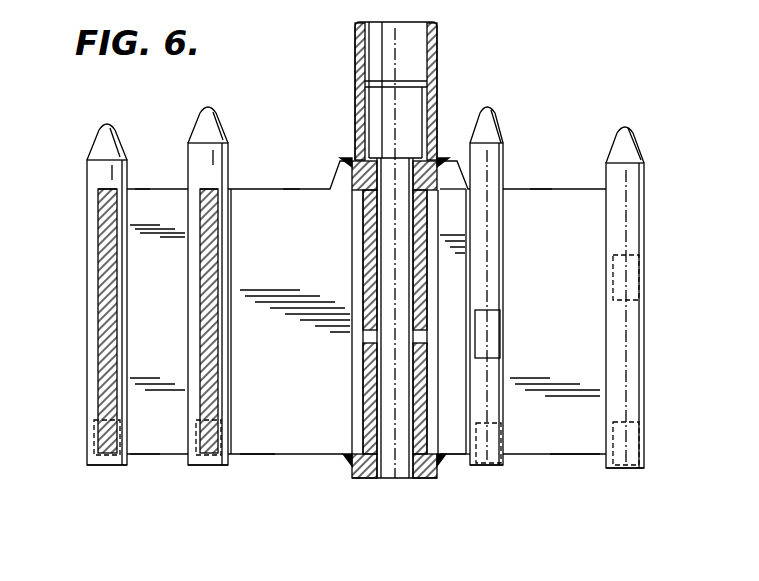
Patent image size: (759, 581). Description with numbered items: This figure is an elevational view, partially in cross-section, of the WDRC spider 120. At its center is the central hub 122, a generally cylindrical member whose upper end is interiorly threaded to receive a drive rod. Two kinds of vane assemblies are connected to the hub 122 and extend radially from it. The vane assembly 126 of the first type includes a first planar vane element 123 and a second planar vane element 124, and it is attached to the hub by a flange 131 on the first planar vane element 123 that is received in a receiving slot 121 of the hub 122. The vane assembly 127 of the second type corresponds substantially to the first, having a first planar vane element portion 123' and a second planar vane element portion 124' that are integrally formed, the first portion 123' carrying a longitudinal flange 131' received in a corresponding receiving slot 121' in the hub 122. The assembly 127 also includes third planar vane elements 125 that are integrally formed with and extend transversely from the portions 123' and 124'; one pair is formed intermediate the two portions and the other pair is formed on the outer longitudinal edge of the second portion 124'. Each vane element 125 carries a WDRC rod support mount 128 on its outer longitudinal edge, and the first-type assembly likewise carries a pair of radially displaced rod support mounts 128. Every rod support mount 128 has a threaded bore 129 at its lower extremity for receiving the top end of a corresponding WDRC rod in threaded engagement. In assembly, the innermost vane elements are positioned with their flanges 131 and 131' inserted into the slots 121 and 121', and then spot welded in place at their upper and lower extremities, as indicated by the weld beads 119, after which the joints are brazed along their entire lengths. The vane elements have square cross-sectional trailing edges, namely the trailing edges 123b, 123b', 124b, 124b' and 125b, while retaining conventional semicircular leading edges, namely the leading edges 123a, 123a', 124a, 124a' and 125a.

The weld bead 119 is at (353, 160).
The WDRC spider 120 is at (543, 97).
The receiving slot 121 is at (422, 366).
The receiving slot 121' is at (324, 292).
The central hub 122 is at (436, 150).
The first planar vane element 123 is at (426, 237).
The first planar vane element portion 123' is at (290, 307).
The semicircular leading edge 123a is at (468, 489).
The semicircular leading edge 123a' is at (254, 479).
The square cross-sectional trailing edge 123b is at (504, 225).
The square cross-sectional trailing edge 123b' is at (282, 220).
The second planar vane element 124 is at (554, 391).
The second planar vane element portion 124' is at (157, 339).
The semicircular leading edge 124a is at (587, 510).
The semicircular leading edge 124a' is at (161, 508).
The square cross-sectional trailing edge 124b is at (569, 201).
The square cross-sectional trailing edge 124b' is at (162, 234).
The third planar vane element 125 is at (200, 216).
The semicircular leading edge 125a is at (111, 454).
The square cross-sectional trailing edge 125b is at (108, 192).
The first type vane assembly 126 is at (581, 170).
The second type vane assembly 127 is at (253, 168).
The WDRC rod support mount 128 is at (505, 168).
The threaded bore 129 is at (110, 467).
The flange 131 is at (388, 345).
The longitudinal flange 131' is at (335, 280).